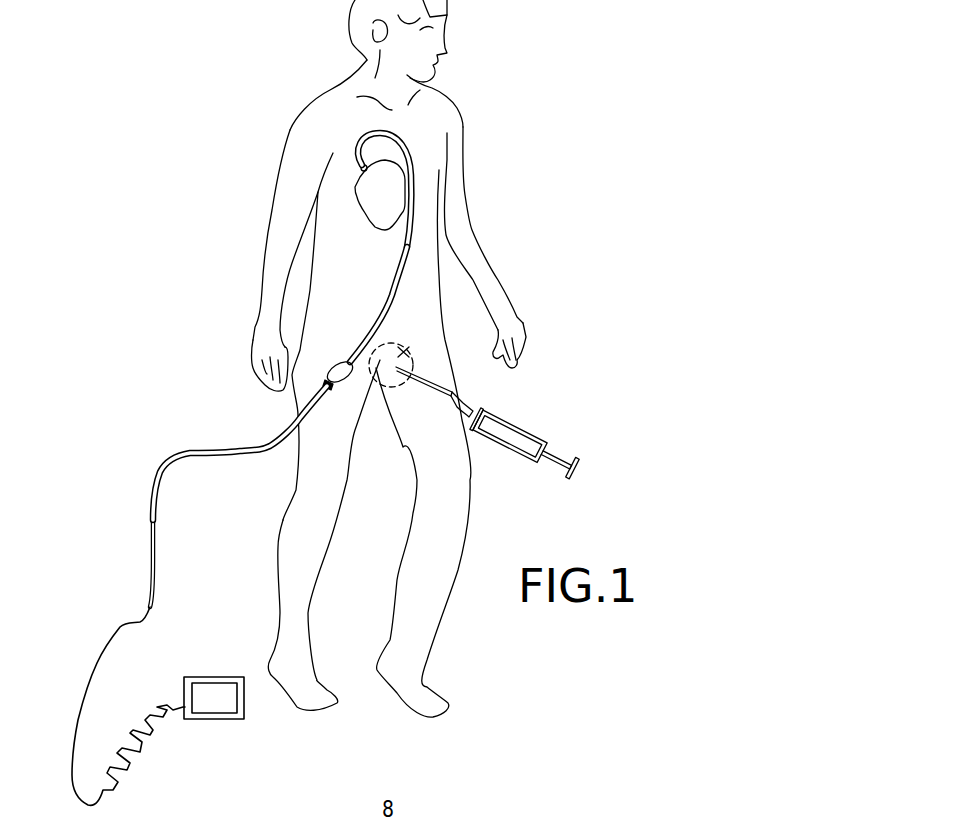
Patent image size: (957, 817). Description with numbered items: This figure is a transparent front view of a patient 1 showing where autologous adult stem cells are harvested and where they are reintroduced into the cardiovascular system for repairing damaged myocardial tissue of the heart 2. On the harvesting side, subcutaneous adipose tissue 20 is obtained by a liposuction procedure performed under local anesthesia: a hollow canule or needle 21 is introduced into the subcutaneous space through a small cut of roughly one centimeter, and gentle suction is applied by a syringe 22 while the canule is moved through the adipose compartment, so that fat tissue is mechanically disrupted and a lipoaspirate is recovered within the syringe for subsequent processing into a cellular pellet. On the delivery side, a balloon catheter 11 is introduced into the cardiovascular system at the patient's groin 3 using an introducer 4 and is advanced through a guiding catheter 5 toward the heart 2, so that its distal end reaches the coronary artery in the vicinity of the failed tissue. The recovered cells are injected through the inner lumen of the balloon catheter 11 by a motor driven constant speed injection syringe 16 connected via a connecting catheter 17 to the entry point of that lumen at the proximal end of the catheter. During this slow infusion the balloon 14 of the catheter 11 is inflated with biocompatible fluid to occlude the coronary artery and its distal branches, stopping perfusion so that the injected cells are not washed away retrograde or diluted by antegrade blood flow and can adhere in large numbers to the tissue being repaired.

The patient 1 is at (288, 134).
The heart 2 is at (397, 180).
The groin 3 is at (332, 364).
The introducer 4 is at (323, 384).
The guiding catheter 5 is at (165, 467).
The balloon catheter 11 is at (403, 240).
The balloon 14 is at (360, 167).
The motor driven constant speed injection syringe 16 is at (218, 677).
The connecting catheter 17 is at (97, 663).
The subcutaneous adipose tissue 20 is at (400, 352).
The hollow canule or needle 21 is at (453, 393).
The syringe 22 is at (535, 432).